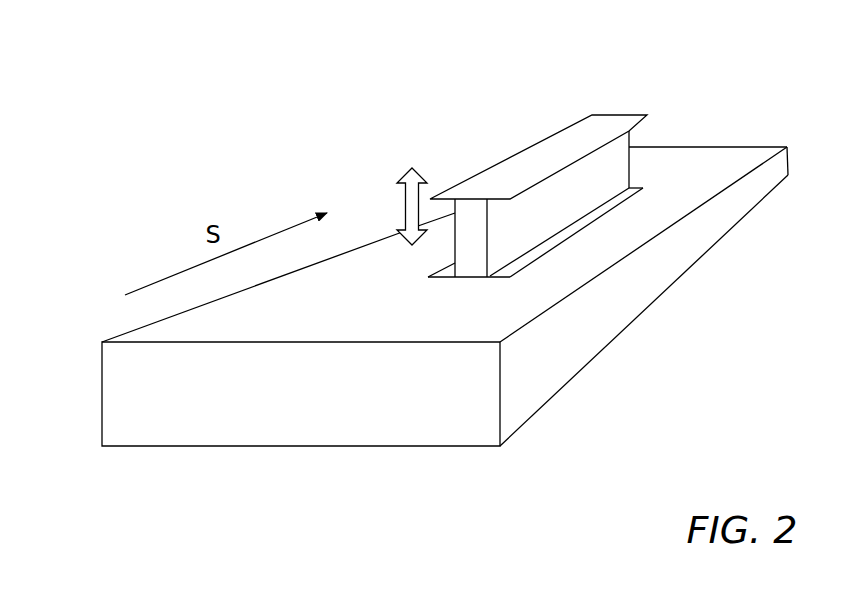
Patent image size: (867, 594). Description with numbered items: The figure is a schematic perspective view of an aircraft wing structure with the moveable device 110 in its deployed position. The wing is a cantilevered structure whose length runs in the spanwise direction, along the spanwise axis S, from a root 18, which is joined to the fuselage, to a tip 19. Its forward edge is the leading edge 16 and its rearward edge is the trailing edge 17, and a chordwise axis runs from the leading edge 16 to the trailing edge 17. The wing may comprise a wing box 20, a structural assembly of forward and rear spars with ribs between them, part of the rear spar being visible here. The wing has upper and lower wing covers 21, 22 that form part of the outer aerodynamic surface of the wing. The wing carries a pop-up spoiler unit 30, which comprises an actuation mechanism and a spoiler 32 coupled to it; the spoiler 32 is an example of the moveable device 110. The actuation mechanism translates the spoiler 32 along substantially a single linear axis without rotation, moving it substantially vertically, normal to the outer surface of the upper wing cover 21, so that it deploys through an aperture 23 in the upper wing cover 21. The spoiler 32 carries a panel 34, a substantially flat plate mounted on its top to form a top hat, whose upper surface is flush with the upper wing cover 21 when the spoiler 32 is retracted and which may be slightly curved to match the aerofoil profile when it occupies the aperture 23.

The leading edge 16 is at (99, 331).
The trailing edge 17 is at (692, 253).
The root 18 is at (324, 381).
The tip 19 is at (701, 142).
The wing box 20 is at (606, 363).
The upper wing cover 21 is at (418, 324).
The lower wing cover 22 is at (384, 456).
The aperture 23 is at (573, 246).
The pop-up spoiler unit 30 is at (574, 144).
The spoiler 32 is at (593, 190).
The panel 34 is at (567, 137).
The moveable device 110 is at (587, 157).